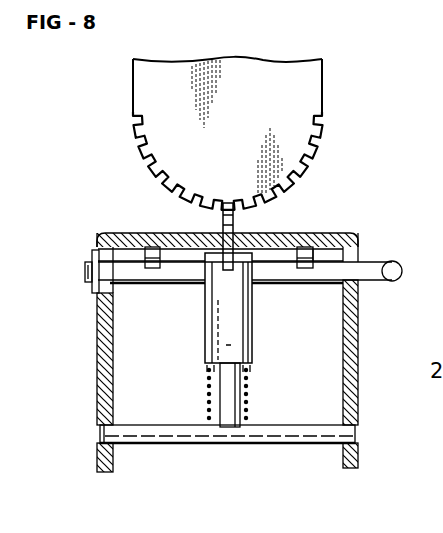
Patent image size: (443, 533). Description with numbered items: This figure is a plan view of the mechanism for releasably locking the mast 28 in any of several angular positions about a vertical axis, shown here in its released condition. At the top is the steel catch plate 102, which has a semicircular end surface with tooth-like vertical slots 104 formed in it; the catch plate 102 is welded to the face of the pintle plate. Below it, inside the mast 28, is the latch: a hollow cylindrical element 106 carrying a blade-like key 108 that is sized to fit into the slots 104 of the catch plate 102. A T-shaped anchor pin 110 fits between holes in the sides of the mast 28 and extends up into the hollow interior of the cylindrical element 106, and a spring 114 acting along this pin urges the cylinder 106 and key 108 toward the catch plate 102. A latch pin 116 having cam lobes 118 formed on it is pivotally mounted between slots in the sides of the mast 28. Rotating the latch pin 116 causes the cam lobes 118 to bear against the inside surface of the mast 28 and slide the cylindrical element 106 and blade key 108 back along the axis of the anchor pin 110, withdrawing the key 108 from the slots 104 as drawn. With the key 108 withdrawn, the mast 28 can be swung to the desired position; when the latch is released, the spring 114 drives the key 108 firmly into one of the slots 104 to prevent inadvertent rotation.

The catch plate 102 is at (234, 133).
The slots 104 is at (152, 158).
The key 108 is at (235, 222).
The cam lobes 118 is at (134, 257).
The latch pin 116 is at (381, 262).
The mast 28 is at (97, 347).
The cylindrical element 106 is at (254, 345).
The spring 114 is at (250, 393).
The T-shaped anchor pin 110 is at (237, 445).